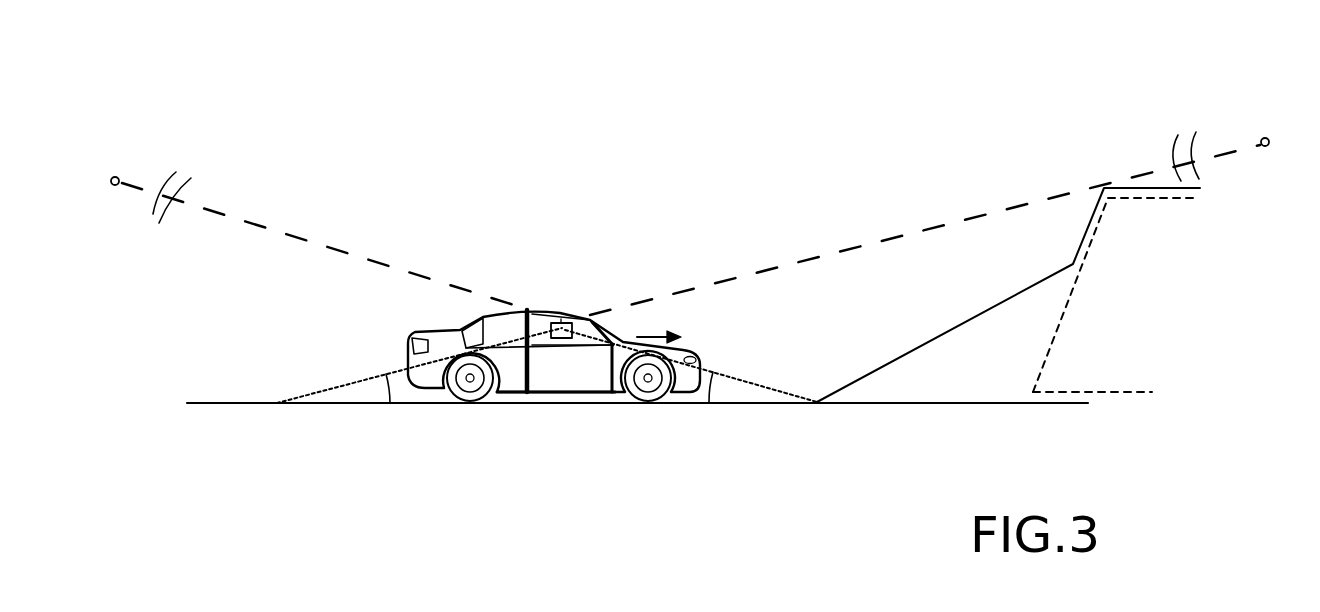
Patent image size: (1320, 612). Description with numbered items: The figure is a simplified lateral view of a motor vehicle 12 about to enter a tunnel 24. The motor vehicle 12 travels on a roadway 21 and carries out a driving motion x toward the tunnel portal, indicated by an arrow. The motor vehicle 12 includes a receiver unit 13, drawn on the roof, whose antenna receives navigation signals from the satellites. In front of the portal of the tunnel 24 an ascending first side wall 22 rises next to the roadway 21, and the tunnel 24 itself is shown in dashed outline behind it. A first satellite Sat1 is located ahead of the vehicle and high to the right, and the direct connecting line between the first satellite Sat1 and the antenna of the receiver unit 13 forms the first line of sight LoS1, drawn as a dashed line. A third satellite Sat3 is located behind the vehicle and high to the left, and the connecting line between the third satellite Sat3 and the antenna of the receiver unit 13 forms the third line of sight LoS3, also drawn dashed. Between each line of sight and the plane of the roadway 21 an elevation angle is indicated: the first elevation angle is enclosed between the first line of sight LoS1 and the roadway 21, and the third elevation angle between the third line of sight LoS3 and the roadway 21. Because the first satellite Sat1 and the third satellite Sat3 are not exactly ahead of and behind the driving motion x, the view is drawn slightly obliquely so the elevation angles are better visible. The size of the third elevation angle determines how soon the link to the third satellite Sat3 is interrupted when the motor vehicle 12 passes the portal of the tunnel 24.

The motor vehicle 12 is at (567, 378).
The receiver unit 13 is at (567, 320).
The roadway 21 is at (845, 405).
The first side wall 22 is at (950, 383).
The tunnel 24 is at (1162, 250).
The first satellite Sat1 is at (1266, 137).
The third satellite Sat3 is at (138, 153).
The first line of sight LoS1 is at (960, 222).
The third line of sight LoS3 is at (258, 189).
The driving motion x is at (660, 333).